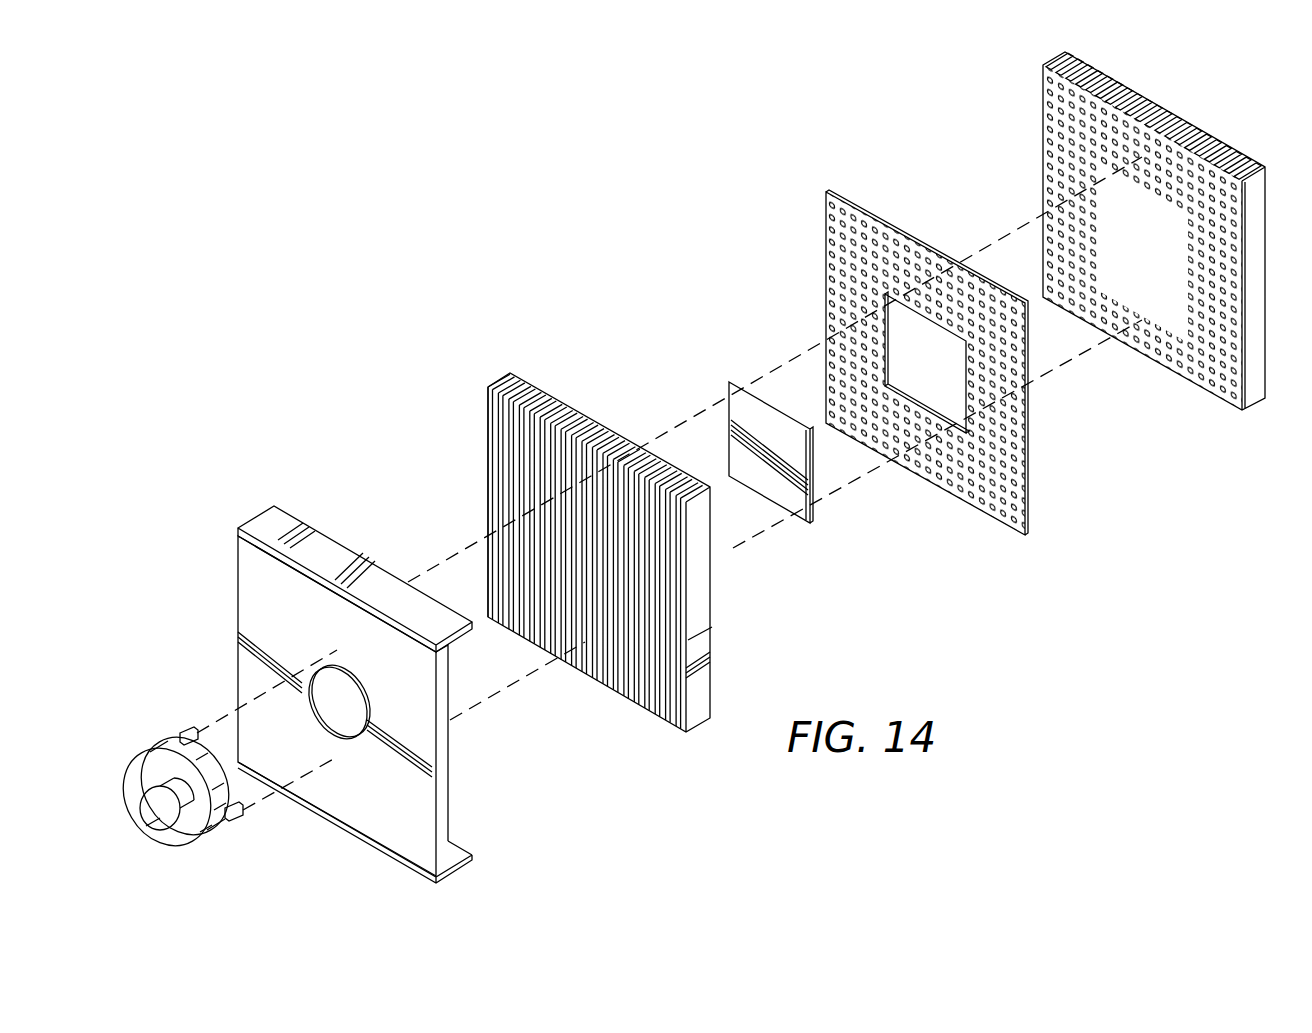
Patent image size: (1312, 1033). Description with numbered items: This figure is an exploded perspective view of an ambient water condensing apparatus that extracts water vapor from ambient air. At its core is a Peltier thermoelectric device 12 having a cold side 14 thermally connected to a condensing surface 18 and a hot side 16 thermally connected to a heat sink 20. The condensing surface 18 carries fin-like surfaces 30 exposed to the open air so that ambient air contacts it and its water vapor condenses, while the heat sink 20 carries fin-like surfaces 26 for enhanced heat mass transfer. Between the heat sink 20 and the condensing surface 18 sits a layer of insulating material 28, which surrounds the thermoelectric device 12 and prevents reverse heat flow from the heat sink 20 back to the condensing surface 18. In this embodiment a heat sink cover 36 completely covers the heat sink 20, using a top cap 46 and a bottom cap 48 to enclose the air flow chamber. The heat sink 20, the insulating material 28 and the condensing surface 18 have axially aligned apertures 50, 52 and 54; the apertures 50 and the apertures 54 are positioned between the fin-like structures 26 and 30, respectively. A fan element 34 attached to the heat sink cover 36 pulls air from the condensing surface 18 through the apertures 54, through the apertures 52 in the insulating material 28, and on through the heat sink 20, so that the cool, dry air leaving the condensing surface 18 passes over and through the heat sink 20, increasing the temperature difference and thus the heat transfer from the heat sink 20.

The Peltier thermoelectric device 12 is at (761, 464).
The cold side 14 is at (817, 472).
The hot side 16 is at (745, 410).
The condensing surface 18 is at (1160, 282).
The heat sink 20 is at (649, 599).
The fin-like surfaces 26 is at (613, 688).
The layer of insulating material 28 is at (967, 394).
The fin-like surfaces 30 is at (1152, 105).
The fan element 34 is at (153, 760).
The heat sink cover 36 is at (362, 795).
The top cap 46 is at (262, 525).
The bottom cap 48 is at (460, 853).
The apertures 50 is at (1182, 345).
The apertures 52 is at (967, 483).
The apertures 54 is at (712, 627).